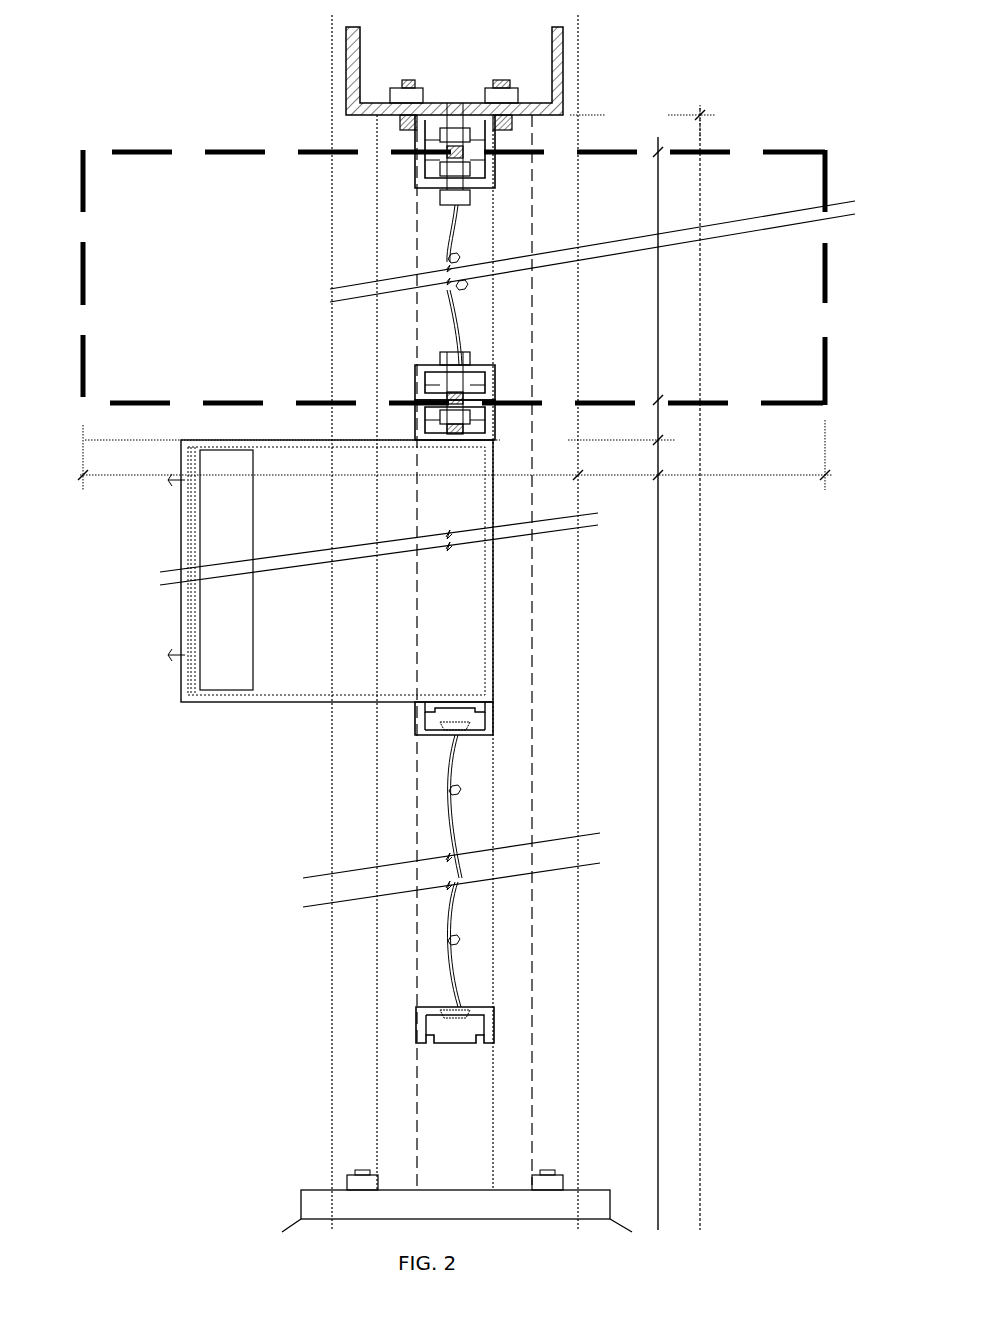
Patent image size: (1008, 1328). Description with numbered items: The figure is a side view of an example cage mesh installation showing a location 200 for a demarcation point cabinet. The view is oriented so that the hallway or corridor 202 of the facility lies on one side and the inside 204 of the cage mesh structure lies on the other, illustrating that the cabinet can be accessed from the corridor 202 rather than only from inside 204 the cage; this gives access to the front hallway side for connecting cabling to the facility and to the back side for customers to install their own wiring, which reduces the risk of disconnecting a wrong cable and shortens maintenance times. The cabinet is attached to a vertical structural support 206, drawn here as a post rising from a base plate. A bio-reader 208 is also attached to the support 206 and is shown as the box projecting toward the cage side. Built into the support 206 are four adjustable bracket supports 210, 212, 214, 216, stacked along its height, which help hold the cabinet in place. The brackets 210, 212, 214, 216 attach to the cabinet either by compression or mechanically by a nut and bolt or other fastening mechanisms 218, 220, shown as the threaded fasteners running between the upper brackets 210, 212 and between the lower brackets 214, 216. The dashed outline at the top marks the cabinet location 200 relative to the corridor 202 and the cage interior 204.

The demarcation point cabinet location 200 is at (795, 403).
The corridor 202 is at (761, 669).
The inside of cage mesh structure 204 is at (110, 701).
The structural support 206 is at (538, 111).
The bio-reader 208 is at (337, 602).
The adjustable bracket support 210 is at (495, 174).
The adjustable bracket support 212 is at (495, 432).
The adjustable bracket support 214 is at (478, 735).
The adjustable bracket support 216 is at (478, 1040).
The fastening mechanism 218 is at (459, 330).
The fastening mechanism 220 is at (462, 826).